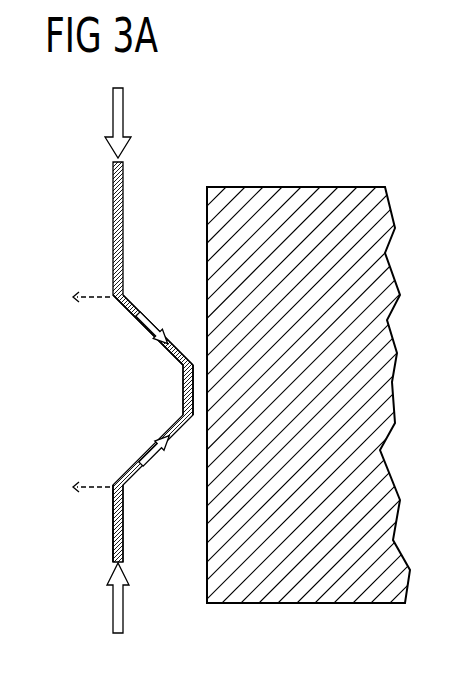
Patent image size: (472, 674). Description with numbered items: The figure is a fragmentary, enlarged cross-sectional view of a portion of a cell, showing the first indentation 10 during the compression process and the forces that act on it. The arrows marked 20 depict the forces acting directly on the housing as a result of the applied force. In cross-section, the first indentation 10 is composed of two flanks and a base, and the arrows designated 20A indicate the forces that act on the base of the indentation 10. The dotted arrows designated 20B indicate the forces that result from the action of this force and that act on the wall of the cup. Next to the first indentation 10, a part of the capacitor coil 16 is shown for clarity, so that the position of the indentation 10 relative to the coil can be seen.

The first indentation 10 is at (146, 362).
The capacitor coil 16 is at (300, 200).
The forces acting directly on the housing 20 is at (113, 120).
The forces acting on the base of the indentation 20A is at (147, 329).
The resulting forces acting on the wall of the cup 20B is at (103, 296).